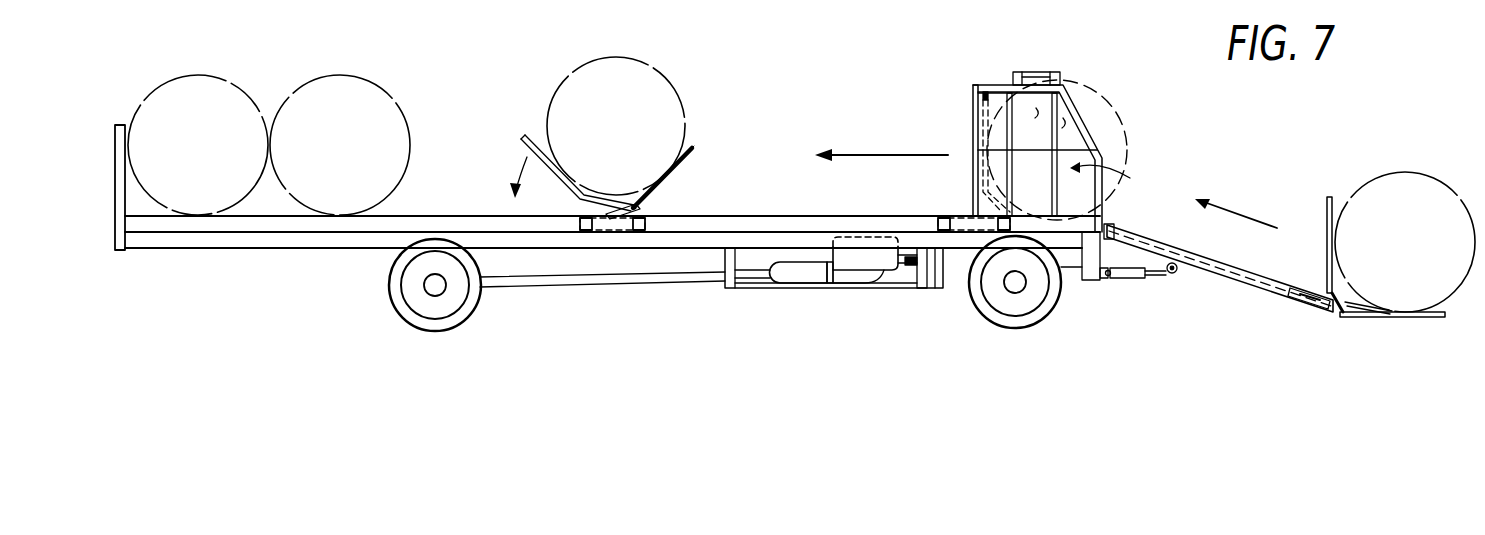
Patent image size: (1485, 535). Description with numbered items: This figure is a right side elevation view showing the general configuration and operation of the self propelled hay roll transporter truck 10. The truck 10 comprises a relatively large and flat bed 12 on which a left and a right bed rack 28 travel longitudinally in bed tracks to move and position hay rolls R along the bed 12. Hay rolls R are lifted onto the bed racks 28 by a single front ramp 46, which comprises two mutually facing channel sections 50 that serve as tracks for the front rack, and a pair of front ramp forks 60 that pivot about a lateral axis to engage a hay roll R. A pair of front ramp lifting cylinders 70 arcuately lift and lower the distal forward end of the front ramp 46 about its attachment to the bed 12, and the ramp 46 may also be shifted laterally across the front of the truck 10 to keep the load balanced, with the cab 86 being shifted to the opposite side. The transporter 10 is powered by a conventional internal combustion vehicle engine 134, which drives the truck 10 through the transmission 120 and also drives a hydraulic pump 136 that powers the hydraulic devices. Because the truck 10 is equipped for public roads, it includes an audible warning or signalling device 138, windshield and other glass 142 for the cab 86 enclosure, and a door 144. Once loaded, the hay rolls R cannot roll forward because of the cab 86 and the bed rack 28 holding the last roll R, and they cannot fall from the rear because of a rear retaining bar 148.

The self propelled hay roll transporter truck 10 is at (1196, 109).
The bed 12 is at (335, 228).
The bed rack 28 is at (640, 209).
The front ramp 46 is at (1303, 314).
The channel sections 50 is at (1210, 258).
The front ramp forks 60 is at (1360, 320).
The front ramp lifting cylinders 70 is at (1137, 280).
The cab 86 is at (972, 85).
The transmission 120 is at (793, 280).
The internal combustion vehicle engine 134 is at (882, 275).
The hydraulic pump 136 is at (908, 267).
The audible warning or signalling device 138 is at (1040, 72).
The windshield and other glass 142 is at (1040, 108).
The door 144 is at (1047, 185).
The rear retaining bar 148 is at (118, 125).
The hay roll R is at (300, 83).